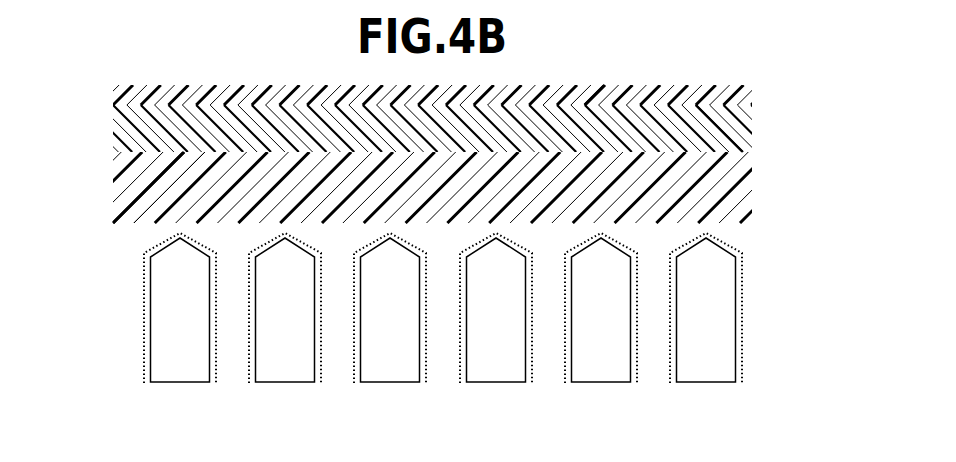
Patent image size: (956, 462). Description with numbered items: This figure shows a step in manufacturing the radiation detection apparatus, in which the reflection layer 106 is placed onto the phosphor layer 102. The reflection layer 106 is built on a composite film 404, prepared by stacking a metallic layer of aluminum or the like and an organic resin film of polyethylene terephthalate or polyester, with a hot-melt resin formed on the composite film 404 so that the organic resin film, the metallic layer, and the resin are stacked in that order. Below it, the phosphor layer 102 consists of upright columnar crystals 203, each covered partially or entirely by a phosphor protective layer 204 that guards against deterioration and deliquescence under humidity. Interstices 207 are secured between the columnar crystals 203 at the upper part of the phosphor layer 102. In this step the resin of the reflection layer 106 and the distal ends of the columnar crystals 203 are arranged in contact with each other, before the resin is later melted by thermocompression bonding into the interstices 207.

The phosphor layer 102 is at (490, 340).
The reflection layer 106 is at (451, 181).
The columnar crystals 203 is at (598, 340).
The phosphor protective layer 204 is at (463, 340).
The interstices 207 is at (337, 342).
The composite film 404 is at (421, 118).